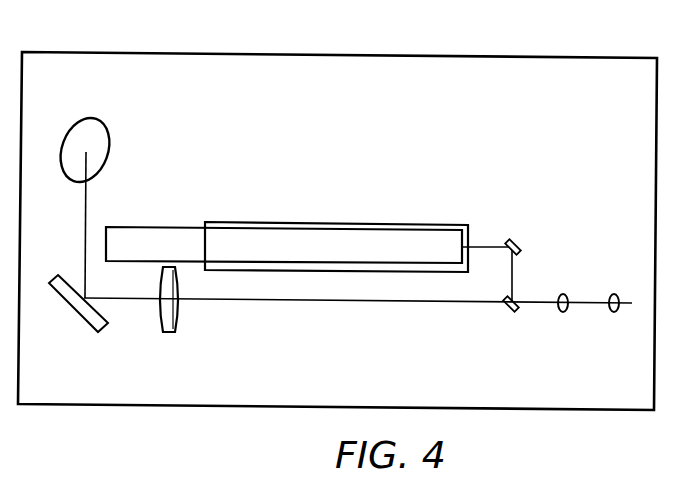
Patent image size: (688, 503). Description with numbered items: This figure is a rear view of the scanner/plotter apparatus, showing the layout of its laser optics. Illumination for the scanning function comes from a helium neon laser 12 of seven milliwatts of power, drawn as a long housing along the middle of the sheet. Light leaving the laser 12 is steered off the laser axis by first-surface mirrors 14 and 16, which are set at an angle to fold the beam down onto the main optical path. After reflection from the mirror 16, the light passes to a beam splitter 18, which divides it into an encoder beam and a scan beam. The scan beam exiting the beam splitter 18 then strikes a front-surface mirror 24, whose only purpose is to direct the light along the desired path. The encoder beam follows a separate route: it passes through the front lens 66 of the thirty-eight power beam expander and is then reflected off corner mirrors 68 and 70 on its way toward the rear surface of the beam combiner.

The helium neon laser 12 is at (127, 230).
The first-surface mirror 14 is at (520, 244).
The first-surface mirror 16 is at (512, 313).
The beam splitter 18 is at (563, 312).
The front-surface mirror 24 is at (614, 312).
The front lens 66 is at (172, 332).
The corner mirror 68 is at (93, 323).
The corner mirror 70 is at (112, 125).